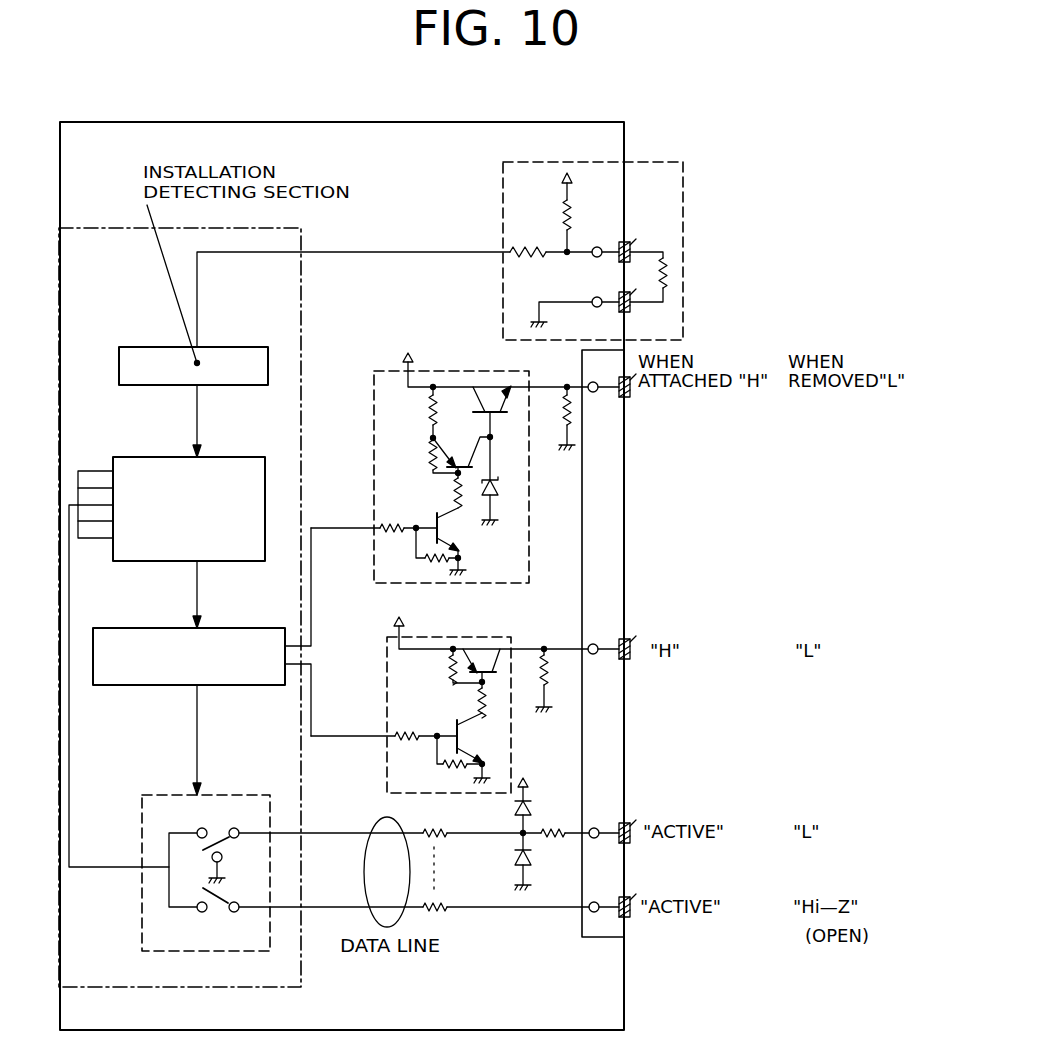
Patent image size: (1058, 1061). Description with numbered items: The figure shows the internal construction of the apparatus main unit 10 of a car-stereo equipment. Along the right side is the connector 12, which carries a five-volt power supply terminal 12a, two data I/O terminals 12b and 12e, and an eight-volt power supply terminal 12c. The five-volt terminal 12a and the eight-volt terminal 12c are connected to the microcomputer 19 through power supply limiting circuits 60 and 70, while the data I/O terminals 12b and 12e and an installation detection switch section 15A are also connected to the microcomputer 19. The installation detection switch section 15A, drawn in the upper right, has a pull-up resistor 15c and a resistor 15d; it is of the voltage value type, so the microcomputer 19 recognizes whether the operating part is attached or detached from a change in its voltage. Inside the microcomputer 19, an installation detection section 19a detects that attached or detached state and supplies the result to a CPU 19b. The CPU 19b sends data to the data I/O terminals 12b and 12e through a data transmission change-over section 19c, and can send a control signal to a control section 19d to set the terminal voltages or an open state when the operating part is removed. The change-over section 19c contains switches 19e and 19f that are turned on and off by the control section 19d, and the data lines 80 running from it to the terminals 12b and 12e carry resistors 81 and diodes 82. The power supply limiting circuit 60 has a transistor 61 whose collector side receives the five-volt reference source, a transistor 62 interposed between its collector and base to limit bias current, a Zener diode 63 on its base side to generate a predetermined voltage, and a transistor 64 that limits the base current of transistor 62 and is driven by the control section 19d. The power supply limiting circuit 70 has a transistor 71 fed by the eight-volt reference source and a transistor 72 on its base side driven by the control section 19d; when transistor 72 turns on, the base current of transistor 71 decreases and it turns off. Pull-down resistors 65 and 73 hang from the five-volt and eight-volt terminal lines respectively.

The apparatus main unit 10 is at (170, 122).
The connector 12 is at (626, 553).
The 5 V power supply terminal 12a is at (632, 391).
The data I/O terminal 12b is at (632, 826).
The 8 V power supply terminal 12c is at (632, 653).
The data I/O terminal 12e is at (632, 900).
The installation detection switch section 15A is at (552, 251).
The pull-up resistor 15c is at (563, 213).
The resistor 15d is at (530, 259).
The microcomputer 19 is at (88, 228).
The installation detection section 19a is at (137, 347).
The CPU 19b is at (142, 457).
The data transmission change-over section 19c is at (142, 848).
The control section 19d is at (135, 628).
The switch 19e is at (216, 848).
The switch 19f is at (217, 913).
The power supply limiting circuit 60 is at (449, 455).
The transistor 61 is at (492, 398).
The transistor 62 is at (456, 460).
The Zener diode 63 is at (502, 482).
The transistor 64 is at (450, 533).
The pull-down resistor 65 is at (562, 430).
The power supply limiting circuit 70 is at (449, 691).
The transistor 71 is at (483, 665).
The transistor 72 is at (470, 740).
The pull-down resistor 73 is at (553, 686).
The data lines 80 is at (356, 814).
The resistors 81 is at (445, 832).
The diodes 82 is at (531, 805).